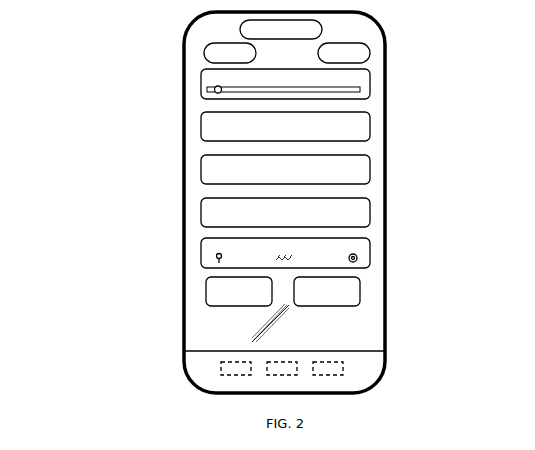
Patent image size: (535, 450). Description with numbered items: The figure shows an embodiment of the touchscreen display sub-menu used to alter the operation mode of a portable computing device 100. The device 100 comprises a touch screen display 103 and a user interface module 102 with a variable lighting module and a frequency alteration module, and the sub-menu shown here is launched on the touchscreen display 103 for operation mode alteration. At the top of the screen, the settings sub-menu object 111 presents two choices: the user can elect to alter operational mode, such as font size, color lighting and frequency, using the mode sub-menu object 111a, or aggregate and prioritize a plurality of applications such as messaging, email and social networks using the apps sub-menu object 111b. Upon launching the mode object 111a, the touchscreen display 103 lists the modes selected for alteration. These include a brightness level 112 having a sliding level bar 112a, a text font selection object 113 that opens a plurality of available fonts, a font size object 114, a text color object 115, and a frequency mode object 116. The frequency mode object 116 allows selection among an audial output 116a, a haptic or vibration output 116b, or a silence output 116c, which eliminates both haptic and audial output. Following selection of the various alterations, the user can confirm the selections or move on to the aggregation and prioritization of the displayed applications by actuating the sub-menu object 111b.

The portable computing device 100 is at (184, 62).
The user interface module 102 is at (360, 372).
The touch screen display 103 is at (237, 322).
The sub-menu object 111 is at (324, 28).
The mode sub-menu object 111a is at (208, 50).
The apps sub-menu object 111b is at (368, 52).
The brightness level 112 is at (204, 82).
The sliding level bar 112a is at (360, 90).
The text font selection object 113 is at (350, 127).
The font size object 114 is at (204, 170).
The text color object 115 is at (355, 212).
The frequency mode object 116 is at (204, 243).
The audial output 116a is at (204, 262).
The haptic output 116b is at (297, 258).
The silence output 116c is at (358, 258).